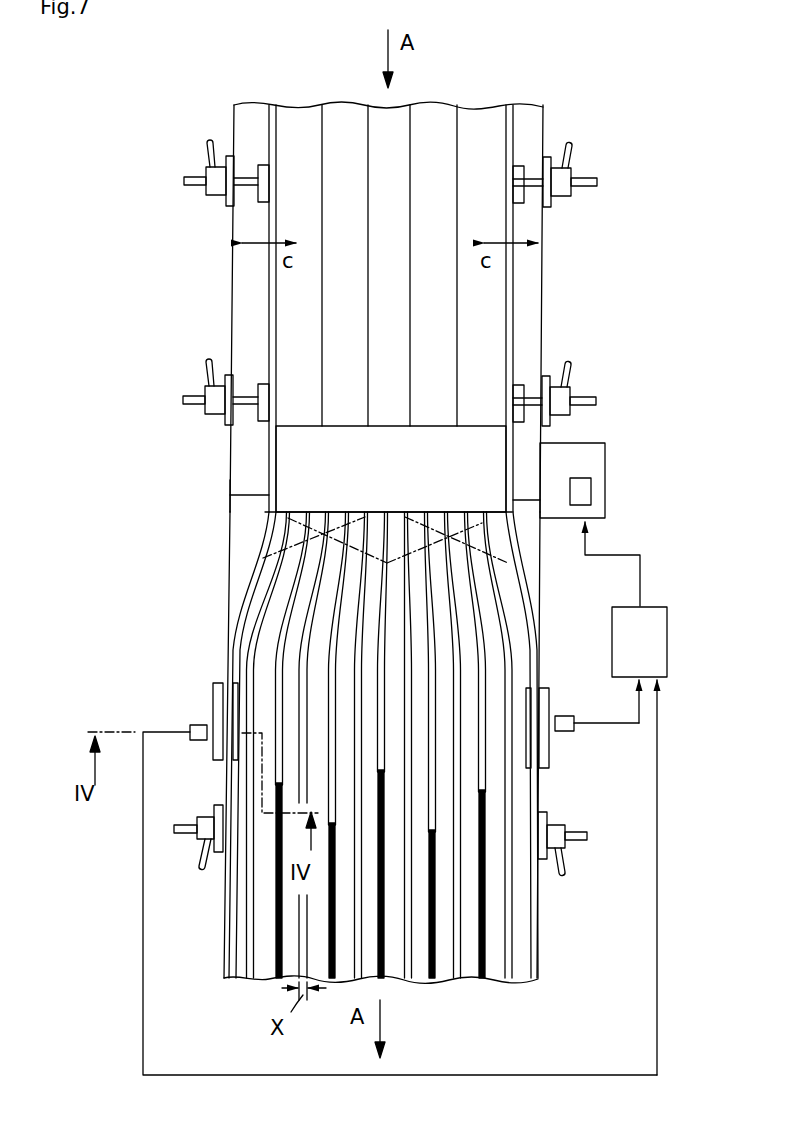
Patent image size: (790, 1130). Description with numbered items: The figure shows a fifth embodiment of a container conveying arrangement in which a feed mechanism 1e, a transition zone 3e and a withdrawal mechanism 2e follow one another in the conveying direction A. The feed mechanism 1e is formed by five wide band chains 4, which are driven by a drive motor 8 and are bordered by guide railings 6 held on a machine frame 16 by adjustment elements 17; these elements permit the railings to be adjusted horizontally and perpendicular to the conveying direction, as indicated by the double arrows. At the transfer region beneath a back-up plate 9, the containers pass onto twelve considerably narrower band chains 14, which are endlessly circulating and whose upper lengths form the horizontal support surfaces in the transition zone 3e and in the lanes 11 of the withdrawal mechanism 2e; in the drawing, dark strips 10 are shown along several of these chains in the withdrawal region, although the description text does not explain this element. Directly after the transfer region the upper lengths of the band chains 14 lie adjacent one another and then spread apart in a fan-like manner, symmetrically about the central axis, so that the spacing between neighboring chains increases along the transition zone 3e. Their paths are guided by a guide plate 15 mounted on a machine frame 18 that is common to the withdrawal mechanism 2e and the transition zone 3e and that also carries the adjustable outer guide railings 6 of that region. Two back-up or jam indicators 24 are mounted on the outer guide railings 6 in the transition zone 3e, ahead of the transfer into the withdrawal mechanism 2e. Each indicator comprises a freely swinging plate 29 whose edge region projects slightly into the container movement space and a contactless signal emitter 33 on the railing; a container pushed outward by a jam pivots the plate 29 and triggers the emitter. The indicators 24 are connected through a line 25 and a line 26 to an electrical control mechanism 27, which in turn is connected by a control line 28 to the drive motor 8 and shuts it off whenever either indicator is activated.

The feed mechanism 1e is at (577, 258).
The withdrawal mechanism 2e is at (183, 922).
The transition zone 3e is at (202, 600).
The band chains 4 is at (383, 125).
The guide railings 6 is at (262, 296).
The drive motor 8 is at (598, 470).
The back-up plate 9 is at (381, 469).
The black filled strips 10 is at (275, 893).
The lanes 11 is at (238, 988).
The band chains 14 is at (318, 520).
The guide plate 15 is at (245, 540).
The machine frame 16 is at (240, 262).
The adjustment elements 17 is at (199, 143).
The machine frame 18 is at (540, 591).
The back-up or jam indicators 24 is at (211, 710).
The line 25 is at (657, 874).
The line 26 is at (605, 724).
The electrical control mechanism 27 is at (667, 617).
The control line 28 is at (612, 557).
The plate 29 is at (220, 682).
The signal emitter 33 is at (570, 732).